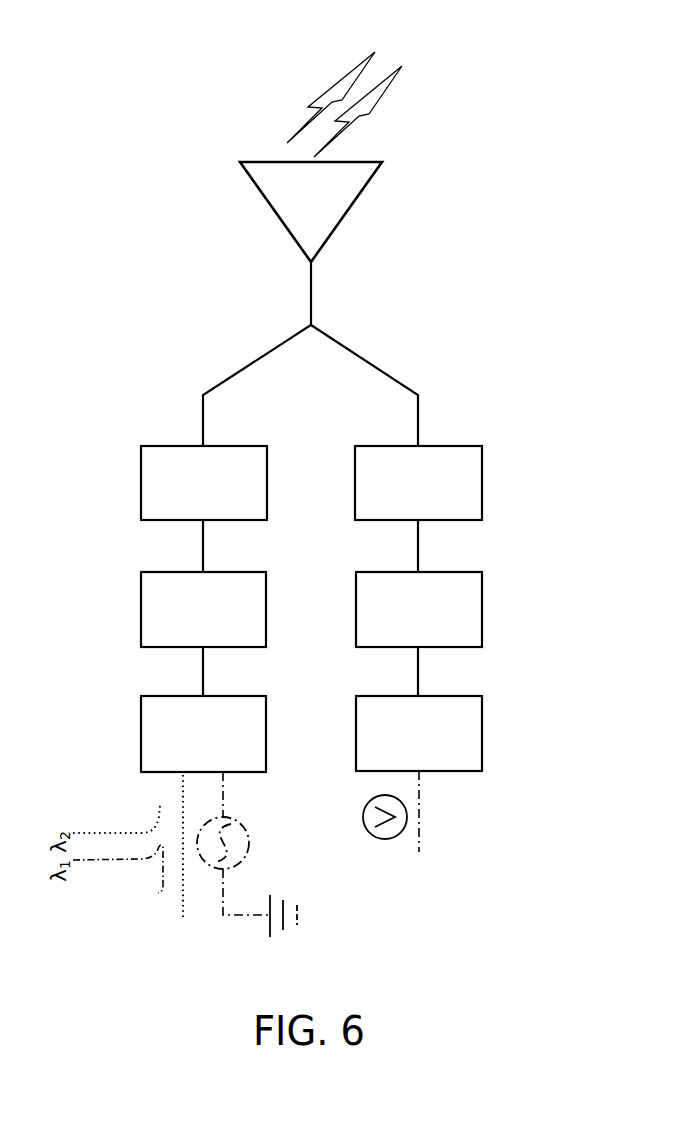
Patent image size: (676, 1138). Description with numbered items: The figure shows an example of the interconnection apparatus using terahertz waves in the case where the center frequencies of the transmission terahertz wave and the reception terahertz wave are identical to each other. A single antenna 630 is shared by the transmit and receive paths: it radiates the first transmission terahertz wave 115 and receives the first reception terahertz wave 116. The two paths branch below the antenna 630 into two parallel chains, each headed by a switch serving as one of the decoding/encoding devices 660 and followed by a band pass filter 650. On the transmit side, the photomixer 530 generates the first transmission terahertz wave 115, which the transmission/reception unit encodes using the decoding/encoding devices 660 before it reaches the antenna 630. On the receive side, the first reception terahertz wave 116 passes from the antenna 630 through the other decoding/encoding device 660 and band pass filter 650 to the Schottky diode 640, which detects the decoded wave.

The first transmission terahertz wave 115 is at (286, 92).
The first reception terahertz wave 116 is at (414, 96).
The antenna 630 is at (236, 200).
The decoding/encoding devices 660 is at (141, 483).
The band pass filter 650 is at (141, 609).
The photomixer 530 is at (141, 733).
The Schottky diode 640 is at (482, 733).